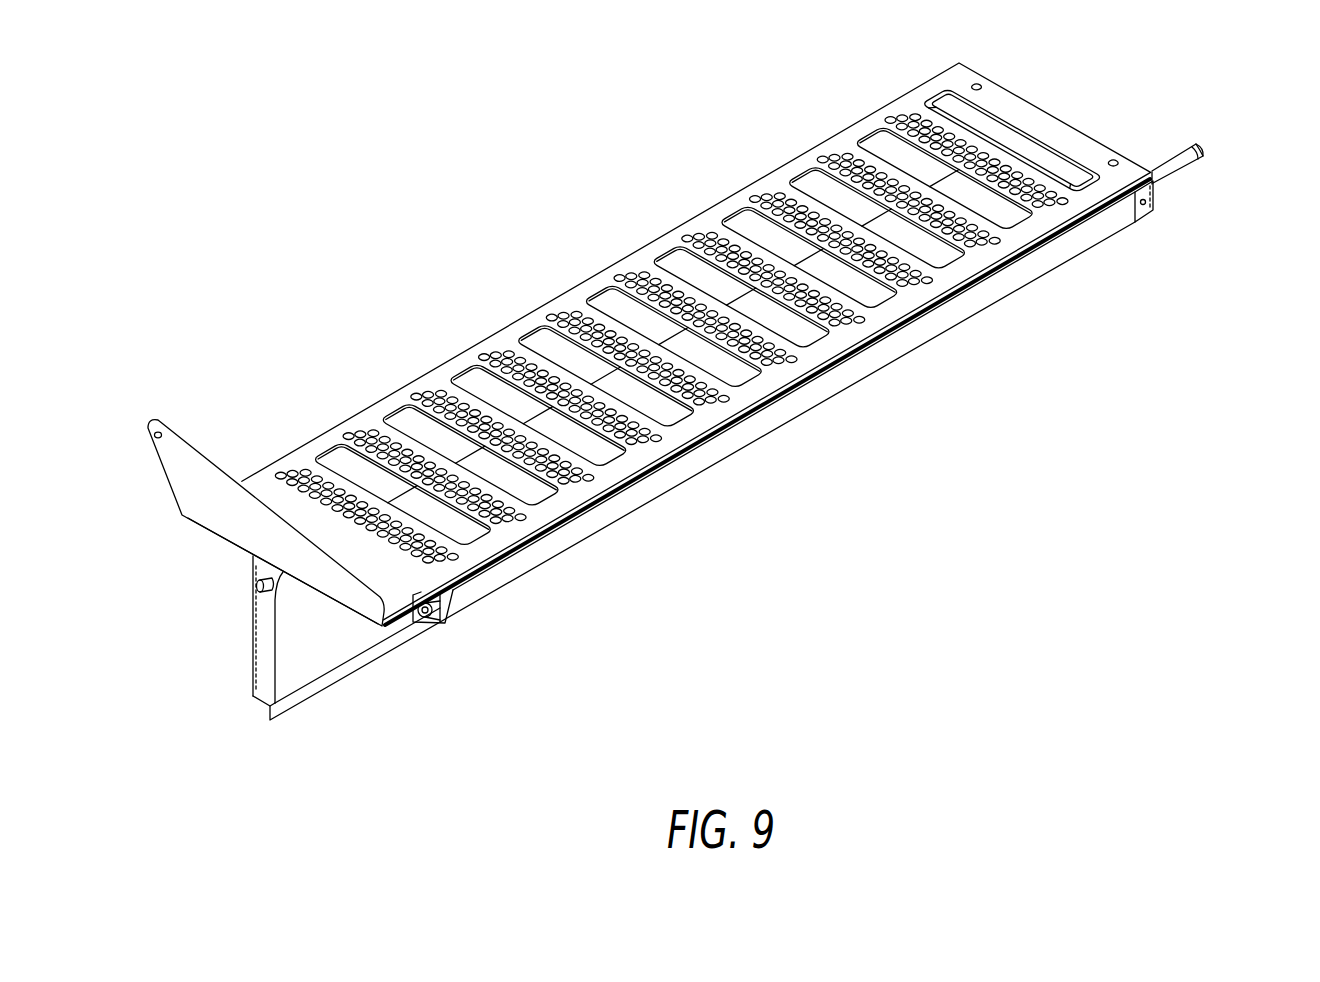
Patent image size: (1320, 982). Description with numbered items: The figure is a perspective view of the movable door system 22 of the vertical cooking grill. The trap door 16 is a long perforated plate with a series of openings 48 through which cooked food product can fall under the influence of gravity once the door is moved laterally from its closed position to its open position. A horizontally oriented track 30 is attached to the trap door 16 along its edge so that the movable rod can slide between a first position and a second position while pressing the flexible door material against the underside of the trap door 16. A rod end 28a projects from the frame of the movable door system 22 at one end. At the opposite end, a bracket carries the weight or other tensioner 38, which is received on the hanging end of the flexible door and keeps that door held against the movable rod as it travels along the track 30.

The trap door 16 is at (487, 357).
The movable door system 22 is at (379, 667).
The pivot rod 28a is at (1188, 167).
The track 30 is at (933, 102).
The weight or other tensioner 38 is at (258, 587).
The opening 48 is at (394, 412).